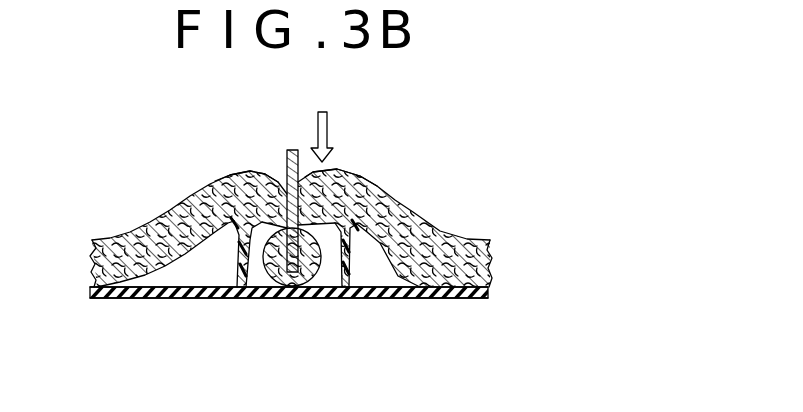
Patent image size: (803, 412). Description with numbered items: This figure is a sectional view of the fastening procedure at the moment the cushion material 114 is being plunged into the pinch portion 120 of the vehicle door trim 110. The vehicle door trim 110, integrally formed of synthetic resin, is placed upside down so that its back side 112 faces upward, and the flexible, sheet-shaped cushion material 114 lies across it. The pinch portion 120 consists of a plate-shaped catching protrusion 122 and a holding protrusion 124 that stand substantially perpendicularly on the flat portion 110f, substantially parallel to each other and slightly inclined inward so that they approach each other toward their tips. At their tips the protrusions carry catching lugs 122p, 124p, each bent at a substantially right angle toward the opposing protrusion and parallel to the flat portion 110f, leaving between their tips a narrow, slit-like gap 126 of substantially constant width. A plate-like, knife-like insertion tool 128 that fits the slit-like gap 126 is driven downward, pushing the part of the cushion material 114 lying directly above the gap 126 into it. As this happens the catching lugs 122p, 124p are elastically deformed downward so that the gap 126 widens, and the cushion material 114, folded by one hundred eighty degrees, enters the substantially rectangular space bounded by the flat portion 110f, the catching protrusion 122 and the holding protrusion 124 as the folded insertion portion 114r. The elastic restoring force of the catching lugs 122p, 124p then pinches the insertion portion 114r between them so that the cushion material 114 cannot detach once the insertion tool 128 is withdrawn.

The vehicle door trim 110 is at (147, 329).
The flat portion 110f is at (253, 292).
The back side 112 is at (420, 284).
The cushion material 114 is at (141, 211).
The insertion portion 114r is at (340, 268).
The pinch portion 120 is at (397, 224).
The catching protrusion 122 is at (234, 261).
The catching lug 122p is at (265, 203).
The holding protrusion 124 is at (357, 265).
The catching lug 124p is at (363, 205).
The slit-like gap 126 is at (262, 234).
The insertion tool 128 is at (291, 150).